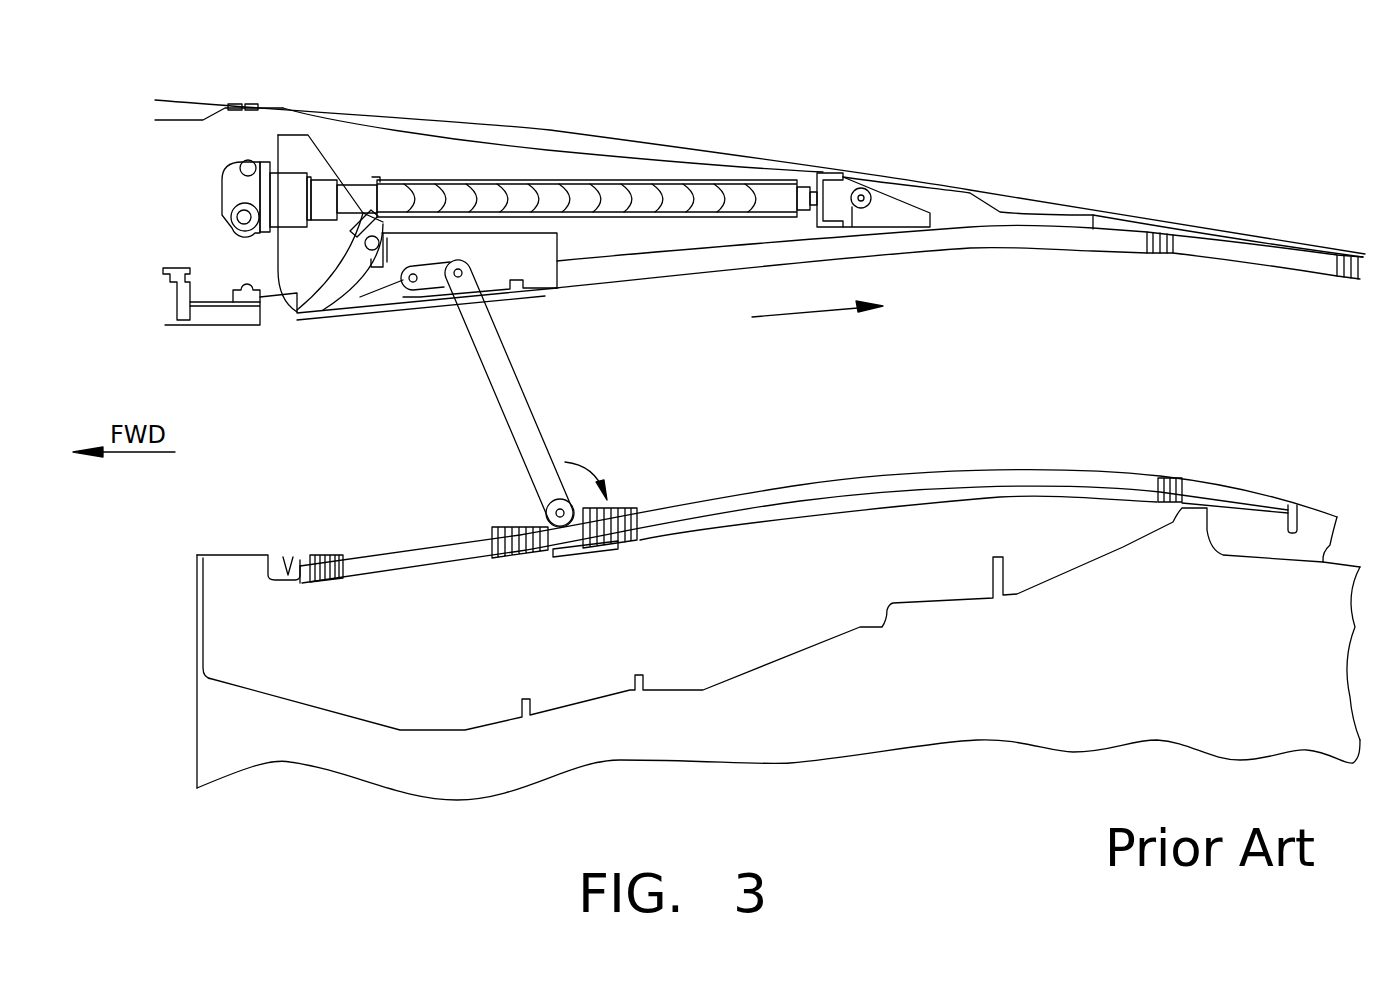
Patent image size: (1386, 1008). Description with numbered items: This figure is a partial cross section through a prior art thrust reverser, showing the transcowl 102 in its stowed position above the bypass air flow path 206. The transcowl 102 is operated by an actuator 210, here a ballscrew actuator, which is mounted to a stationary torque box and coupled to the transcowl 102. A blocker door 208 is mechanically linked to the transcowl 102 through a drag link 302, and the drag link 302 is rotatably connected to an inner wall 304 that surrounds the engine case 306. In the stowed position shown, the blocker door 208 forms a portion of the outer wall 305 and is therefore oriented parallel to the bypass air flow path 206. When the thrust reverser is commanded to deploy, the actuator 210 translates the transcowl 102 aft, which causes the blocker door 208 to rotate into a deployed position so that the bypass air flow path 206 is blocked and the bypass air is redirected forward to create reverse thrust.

The transcowl 102 is at (638, 143).
The actuator 210 is at (232, 190).
The blocker door 208 is at (395, 310).
The drag link 302 is at (515, 395).
The outer wall 305 is at (921, 255).
The bypass air flow path 206 is at (797, 313).
The inner wall 304 is at (817, 480).
The engine case 306 is at (435, 730).